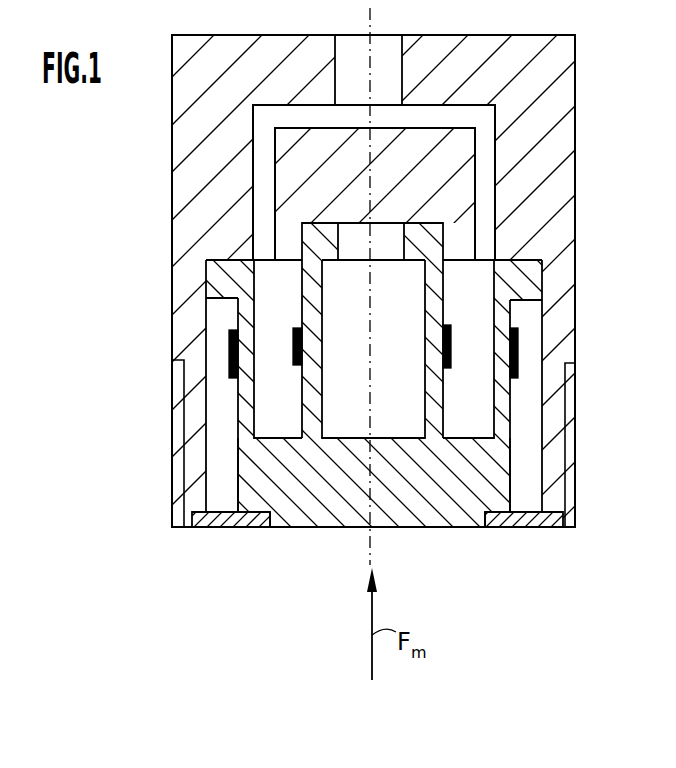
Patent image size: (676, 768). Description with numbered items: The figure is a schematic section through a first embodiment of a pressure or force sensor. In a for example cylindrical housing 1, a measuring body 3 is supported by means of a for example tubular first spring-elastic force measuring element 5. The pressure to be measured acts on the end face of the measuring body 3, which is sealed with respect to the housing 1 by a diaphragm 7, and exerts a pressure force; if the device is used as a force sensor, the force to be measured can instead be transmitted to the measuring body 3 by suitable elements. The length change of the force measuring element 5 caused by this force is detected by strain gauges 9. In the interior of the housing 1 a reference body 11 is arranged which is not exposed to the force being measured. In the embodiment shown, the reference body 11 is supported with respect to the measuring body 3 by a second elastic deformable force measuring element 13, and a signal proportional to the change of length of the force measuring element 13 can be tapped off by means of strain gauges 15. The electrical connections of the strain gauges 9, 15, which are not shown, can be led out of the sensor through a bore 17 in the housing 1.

The housing 1 is at (557, 75).
The measuring body 3 is at (440, 498).
The first spring-elastic force measuring element 5 is at (497, 413).
The diaphragm 7 is at (510, 522).
The strain gauges 9 is at (518, 343).
The reference body 11 is at (452, 183).
The second elastic deformable force measuring element 13 is at (433, 308).
The strain gauges 15 is at (292, 332).
The bore 17 is at (392, 50).